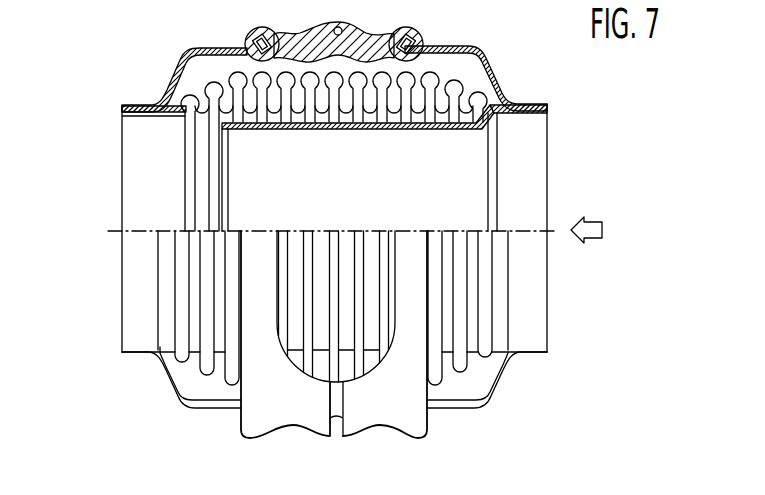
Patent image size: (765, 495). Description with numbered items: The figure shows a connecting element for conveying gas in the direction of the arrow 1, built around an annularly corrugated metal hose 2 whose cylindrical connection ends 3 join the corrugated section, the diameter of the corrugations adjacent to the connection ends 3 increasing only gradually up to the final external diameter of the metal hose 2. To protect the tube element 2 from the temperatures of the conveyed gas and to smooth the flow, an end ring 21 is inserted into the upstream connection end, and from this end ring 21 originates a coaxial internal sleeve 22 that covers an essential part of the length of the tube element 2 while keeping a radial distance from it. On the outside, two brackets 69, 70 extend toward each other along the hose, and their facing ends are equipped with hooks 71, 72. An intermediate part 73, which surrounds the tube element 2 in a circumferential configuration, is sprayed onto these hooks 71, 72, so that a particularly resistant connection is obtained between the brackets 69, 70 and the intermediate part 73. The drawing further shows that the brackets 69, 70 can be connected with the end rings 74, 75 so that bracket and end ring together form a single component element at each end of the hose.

The arrow 1 is at (598, 216).
The annularly corrugated metal hose 2 is at (482, 78).
The cylindrical connection end 3 is at (140, 142).
The end ring 21 is at (530, 155).
The coaxial internal sleeve 22 is at (236, 168).
The bracket 69 is at (169, 76).
The bracket 70 is at (505, 92).
The hook 71 is at (252, 45).
The hook 72 is at (412, 46).
The intermediate part 73 is at (323, 38).
The end ring 74 is at (121, 104).
The end ring 75 is at (538, 104).